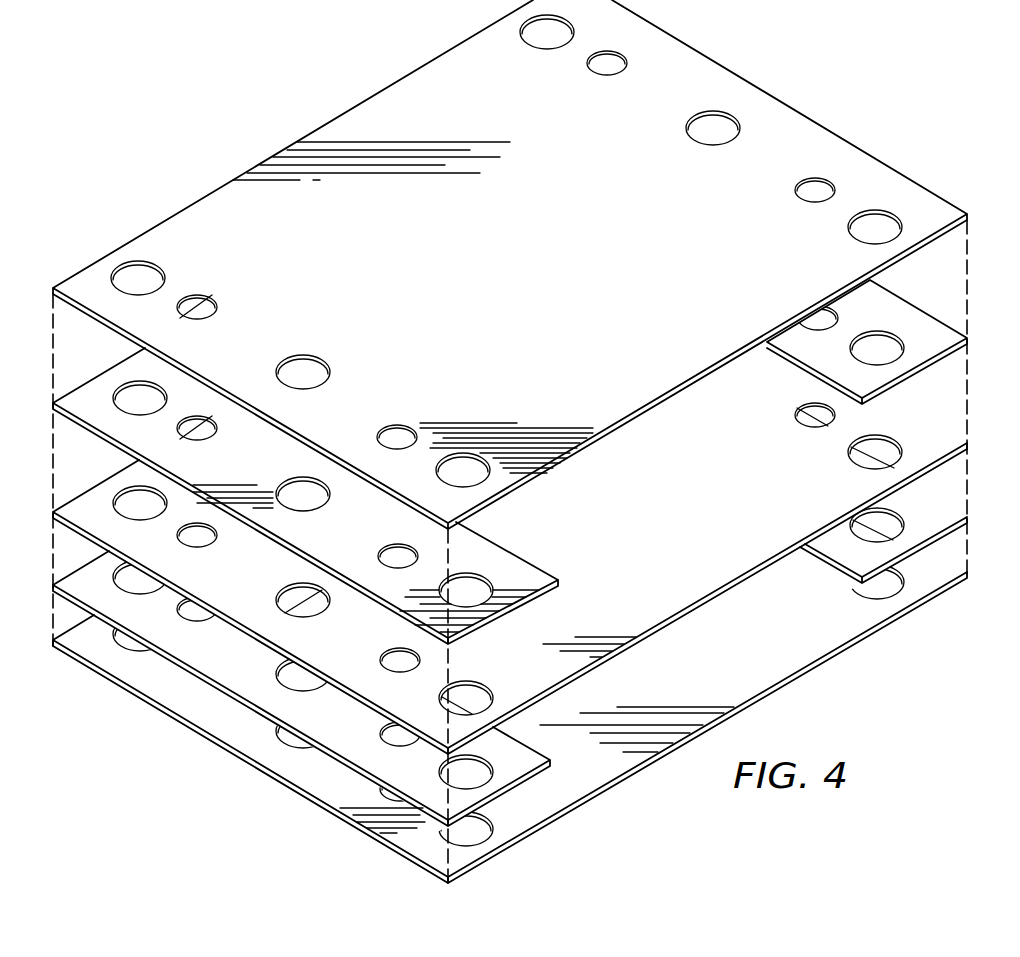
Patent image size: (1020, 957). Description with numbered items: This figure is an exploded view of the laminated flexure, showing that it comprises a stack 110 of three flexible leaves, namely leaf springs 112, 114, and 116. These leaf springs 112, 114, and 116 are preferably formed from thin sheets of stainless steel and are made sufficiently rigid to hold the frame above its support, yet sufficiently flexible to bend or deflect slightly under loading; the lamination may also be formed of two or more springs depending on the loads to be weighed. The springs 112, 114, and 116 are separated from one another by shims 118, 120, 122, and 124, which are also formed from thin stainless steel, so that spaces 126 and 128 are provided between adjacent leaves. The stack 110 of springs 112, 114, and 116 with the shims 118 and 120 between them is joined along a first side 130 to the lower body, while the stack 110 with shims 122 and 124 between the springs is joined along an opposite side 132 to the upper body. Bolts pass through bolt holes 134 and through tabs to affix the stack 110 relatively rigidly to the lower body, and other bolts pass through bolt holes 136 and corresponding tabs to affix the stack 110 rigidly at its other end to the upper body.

The stack 110 is at (756, 58).
The leaf spring 112 is at (603, 274).
The leaf spring 114 is at (656, 528).
The leaf spring 116 is at (730, 661).
The shim 118 is at (840, 356).
The shim 120 is at (840, 545).
The shim 122 is at (358, 542).
The shim 124 is at (245, 659).
The space 126 is at (553, 517).
The space 128 is at (752, 598).
The first side 130 is at (896, 146).
The opposite side 132 is at (175, 736).
The bolt holes 134 is at (856, 222).
The bolt holes 136 is at (461, 475).